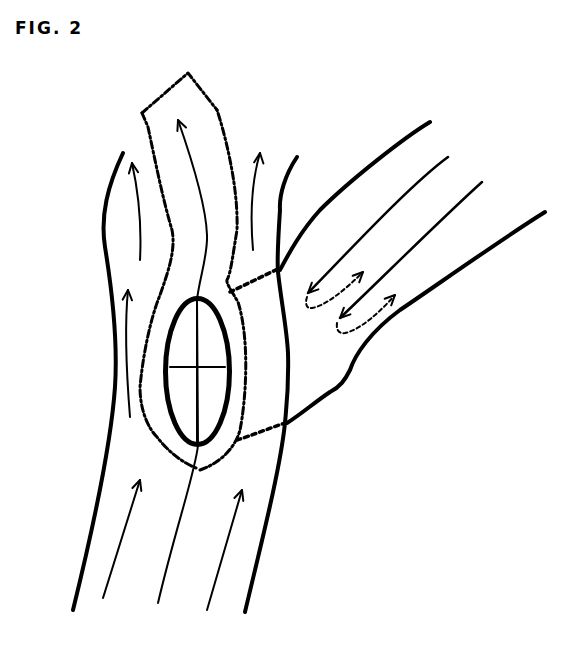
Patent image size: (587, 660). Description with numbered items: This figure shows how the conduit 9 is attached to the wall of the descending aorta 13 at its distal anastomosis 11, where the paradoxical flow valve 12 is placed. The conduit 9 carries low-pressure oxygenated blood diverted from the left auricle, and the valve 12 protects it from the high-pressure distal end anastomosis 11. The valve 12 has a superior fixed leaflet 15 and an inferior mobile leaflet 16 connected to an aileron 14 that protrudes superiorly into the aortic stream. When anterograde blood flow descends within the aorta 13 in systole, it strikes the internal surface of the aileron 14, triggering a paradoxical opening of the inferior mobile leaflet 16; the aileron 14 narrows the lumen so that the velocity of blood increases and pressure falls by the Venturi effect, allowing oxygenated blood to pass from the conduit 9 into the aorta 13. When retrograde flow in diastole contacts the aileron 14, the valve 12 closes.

The conduit 9 is at (502, 240).
The distal anastomosis 11 is at (237, 443).
The paradoxical flow valve 12 is at (137, 382).
The aorta 13 is at (268, 537).
The aileron 14 is at (147, 133).
The superior fixed leaflet 15 is at (185, 327).
The inferior mobile leaflet 16 is at (185, 412).